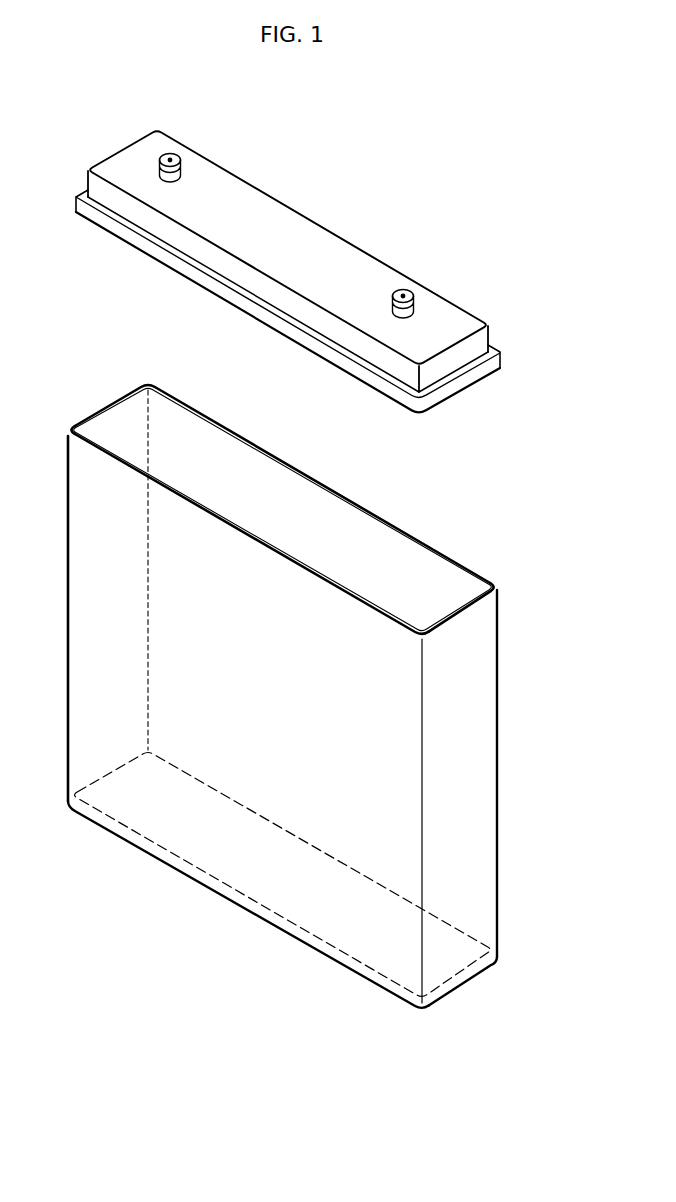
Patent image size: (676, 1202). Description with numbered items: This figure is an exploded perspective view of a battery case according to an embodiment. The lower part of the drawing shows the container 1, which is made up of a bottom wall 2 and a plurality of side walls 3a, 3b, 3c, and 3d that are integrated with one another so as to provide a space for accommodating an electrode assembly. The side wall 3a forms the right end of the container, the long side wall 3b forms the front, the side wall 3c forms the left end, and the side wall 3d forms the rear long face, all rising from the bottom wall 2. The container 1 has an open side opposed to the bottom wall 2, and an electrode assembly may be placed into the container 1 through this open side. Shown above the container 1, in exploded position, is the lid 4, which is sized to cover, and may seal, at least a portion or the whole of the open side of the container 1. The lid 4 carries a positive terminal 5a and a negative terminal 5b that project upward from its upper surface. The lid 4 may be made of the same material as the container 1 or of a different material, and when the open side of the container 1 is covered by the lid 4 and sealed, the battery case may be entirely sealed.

The container 1 is at (295, 547).
The bottom wall 2 is at (213, 893).
The side wall 3a is at (475, 752).
The side wall 3b is at (210, 517).
The side wall 3c is at (103, 405).
The side wall 3d is at (320, 483).
The lid 4 is at (282, 227).
The positive terminal 5a is at (176, 156).
The negative terminal 5b is at (410, 291).